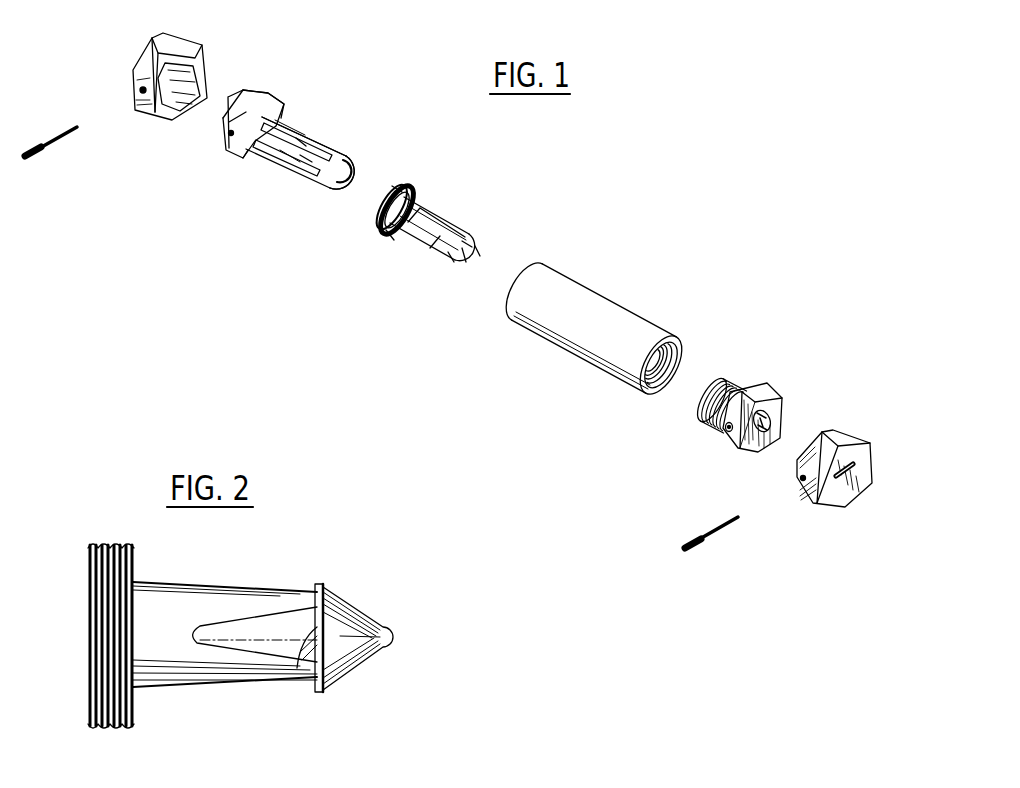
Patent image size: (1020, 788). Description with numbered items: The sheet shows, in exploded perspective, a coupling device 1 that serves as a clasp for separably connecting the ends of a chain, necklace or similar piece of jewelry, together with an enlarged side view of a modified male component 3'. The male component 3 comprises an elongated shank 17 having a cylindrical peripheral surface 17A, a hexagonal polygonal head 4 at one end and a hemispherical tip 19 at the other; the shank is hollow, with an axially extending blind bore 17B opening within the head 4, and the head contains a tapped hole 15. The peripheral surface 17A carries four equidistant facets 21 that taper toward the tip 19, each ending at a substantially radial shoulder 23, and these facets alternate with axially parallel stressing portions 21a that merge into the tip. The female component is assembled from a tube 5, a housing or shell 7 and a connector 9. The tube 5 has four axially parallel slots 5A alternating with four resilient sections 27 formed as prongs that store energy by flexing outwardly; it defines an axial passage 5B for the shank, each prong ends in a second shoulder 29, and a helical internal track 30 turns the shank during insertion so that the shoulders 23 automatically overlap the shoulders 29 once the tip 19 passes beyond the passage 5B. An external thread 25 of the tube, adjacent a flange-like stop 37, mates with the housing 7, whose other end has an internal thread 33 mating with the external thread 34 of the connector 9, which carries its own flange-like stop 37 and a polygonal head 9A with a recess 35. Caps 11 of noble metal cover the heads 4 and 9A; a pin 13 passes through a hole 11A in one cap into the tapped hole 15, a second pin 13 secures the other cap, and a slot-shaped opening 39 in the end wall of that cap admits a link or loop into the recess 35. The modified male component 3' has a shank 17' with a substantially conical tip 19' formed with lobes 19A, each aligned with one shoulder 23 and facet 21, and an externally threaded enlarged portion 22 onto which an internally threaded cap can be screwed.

In FIG. 1, the coupling device 1 is at (637, 162).
In FIG. 1, the male component 3 is at (311, 149).
In FIG. 2, the modified male component 3' is at (232, 637).
In FIG. 1, the polygonal head 4 is at (260, 93).
In FIG. 1, the tube 5 is at (462, 235).
In FIG. 1, the axially parallel slots 5A is at (450, 220).
In FIG. 1, the axial passage 5B is at (480, 258).
In FIG. 1, the housing or shell 7 is at (606, 306).
In FIG. 1, the connector 9 is at (762, 405).
In FIG. 1, the polygonal head of connector 9A is at (752, 444).
In FIG. 1, the cap or lid 11 is at (150, 55).
In FIG. 1, the hole in cap 11A is at (133, 93).
In FIG. 1, the pin 13 is at (57, 147).
In FIG. 1, the tapped hole or bore 15 is at (230, 137).
In FIG. 1, the shank 17 is at (287, 185).
In FIG. 2, the shank of modified male component 17' is at (228, 610).
In FIG. 1, the cylindrical peripheral surface 17A is at (287, 117).
In FIG. 1, the axially extending blind bore 17B is at (230, 100).
In FIG. 1, the tip or end portion 19 is at (326, 204).
In FIG. 2, the conical tip 19' is at (375, 624).
In FIG. 2, the lobes 19A is at (338, 678).
In FIG. 1, the facets 21 is at (290, 175).
In FIG. 2, the facets 21 is at (262, 633).
In FIG. 1, the stressing portions 21a is at (317, 128).
In FIG. 2, the externally threaded enlarged portion 22 is at (110, 727).
In FIG. 1, the shoulder 23 is at (330, 140).
In FIG. 2, the shoulder 23 is at (308, 638).
In FIG. 1, the external thread 25 is at (397, 247).
In FIG. 1, the resilient sections 27 is at (465, 262).
In FIG. 1, the second shoulder or edge face 29 is at (480, 257).
In FIG. 1, the helical internal track 30 is at (432, 262).
In FIG. 1, the internal thread of housing 33 is at (683, 360).
In FIG. 1, the external thread of connector 34 is at (725, 377).
In FIG. 1, the recess 35 is at (775, 420).
In FIG. 1, the flange-like stop 37 is at (398, 183).
In FIG. 1, the slot-shaped opening 39 is at (852, 469).